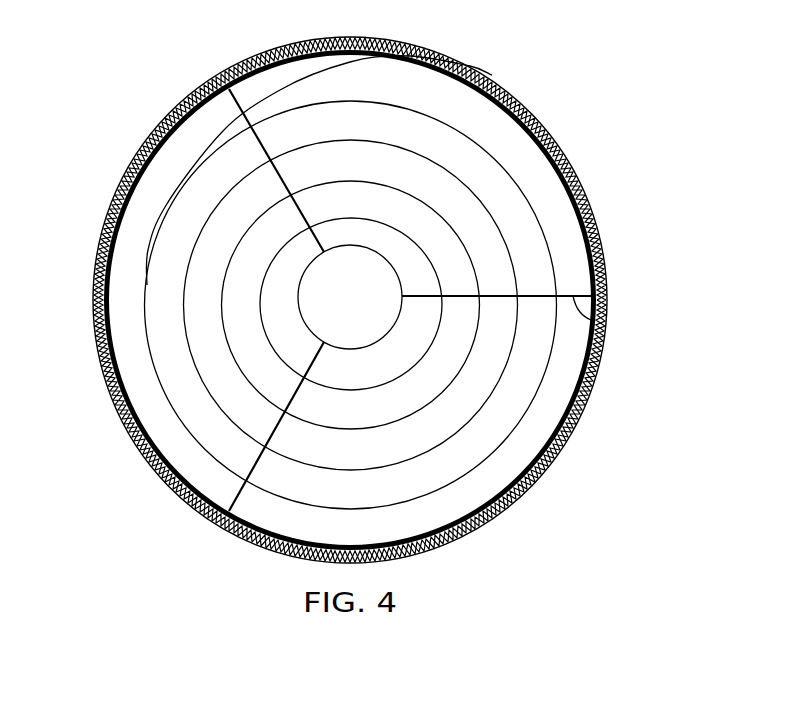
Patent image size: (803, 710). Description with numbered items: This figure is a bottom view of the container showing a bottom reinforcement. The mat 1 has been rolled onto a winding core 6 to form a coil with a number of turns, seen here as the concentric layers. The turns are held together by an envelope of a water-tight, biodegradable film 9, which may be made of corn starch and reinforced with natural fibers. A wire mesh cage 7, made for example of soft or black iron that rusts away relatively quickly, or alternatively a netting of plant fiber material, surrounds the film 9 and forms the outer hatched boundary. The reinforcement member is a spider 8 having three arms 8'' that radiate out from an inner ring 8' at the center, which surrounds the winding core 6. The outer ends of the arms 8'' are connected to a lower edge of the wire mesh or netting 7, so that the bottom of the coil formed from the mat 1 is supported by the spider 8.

The mat 1 is at (136, 294).
The winding core 6 is at (370, 278).
The wire mesh cage 7 is at (603, 268).
The spider 8 is at (211, 170).
The inner ring 8' is at (357, 304).
The arms 8'' is at (382, 408).
The film 9 is at (546, 458).